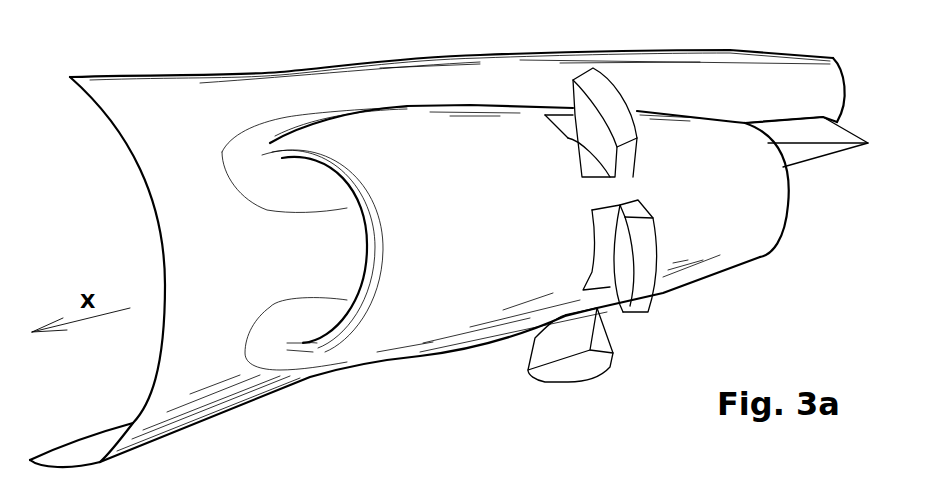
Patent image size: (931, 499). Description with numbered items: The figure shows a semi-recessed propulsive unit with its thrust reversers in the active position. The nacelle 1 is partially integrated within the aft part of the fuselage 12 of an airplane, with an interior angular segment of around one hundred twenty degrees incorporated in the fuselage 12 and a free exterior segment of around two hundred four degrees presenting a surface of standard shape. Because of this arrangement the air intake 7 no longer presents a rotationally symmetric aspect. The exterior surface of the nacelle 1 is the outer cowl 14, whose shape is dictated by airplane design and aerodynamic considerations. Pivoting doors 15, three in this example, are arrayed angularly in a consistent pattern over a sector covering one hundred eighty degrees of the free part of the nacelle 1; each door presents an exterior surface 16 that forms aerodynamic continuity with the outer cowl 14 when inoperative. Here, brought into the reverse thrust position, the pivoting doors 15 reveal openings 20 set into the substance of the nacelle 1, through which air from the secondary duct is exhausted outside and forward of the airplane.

The nacelle 1 is at (442, 368).
The air intake 7 is at (333, 258).
The fuselage 12 is at (255, 98).
The outer cowl 14 is at (427, 140).
The pivoting doors 15 is at (633, 90).
The exterior surface 16 is at (612, 77).
The openings 20 is at (563, 123).